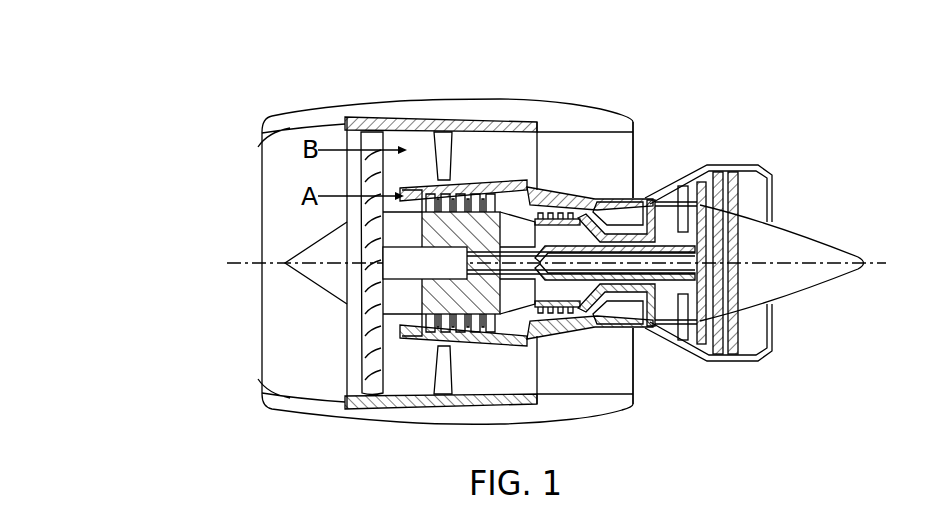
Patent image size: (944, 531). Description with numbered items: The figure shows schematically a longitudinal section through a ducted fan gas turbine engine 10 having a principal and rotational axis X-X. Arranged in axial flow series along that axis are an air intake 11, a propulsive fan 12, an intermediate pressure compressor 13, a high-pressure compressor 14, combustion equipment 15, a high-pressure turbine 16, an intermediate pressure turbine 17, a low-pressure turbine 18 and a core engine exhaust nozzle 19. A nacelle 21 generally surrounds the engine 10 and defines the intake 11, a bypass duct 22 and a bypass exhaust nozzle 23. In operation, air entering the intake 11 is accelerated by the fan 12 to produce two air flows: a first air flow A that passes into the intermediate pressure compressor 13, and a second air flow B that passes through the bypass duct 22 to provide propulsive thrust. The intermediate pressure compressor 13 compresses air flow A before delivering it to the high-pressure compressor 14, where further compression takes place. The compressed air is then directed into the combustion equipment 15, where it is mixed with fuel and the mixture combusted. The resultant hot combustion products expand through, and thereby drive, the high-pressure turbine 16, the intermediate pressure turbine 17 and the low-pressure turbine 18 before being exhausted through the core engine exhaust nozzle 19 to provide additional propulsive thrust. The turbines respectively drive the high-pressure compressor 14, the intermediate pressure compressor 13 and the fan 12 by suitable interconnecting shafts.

The ducted fan gas turbine engine 10 is at (298, 75).
The air intake 11 is at (258, 147).
The propulsive fan 12 is at (362, 357).
The intermediate pressure compressor 13 is at (485, 342).
The high-pressure compressor 14 is at (552, 200).
The combustion equipment 15 is at (597, 316).
The high-pressure turbine 16 is at (640, 330).
The intermediate pressure turbine 17 is at (680, 185).
The low-pressure turbine 18 is at (687, 342).
The core engine exhaust nozzle 19 is at (767, 168).
The nacelle 21 is at (443, 100).
The bypass duct 22 is at (613, 159).
The bypass exhaust nozzle 23 is at (634, 119).